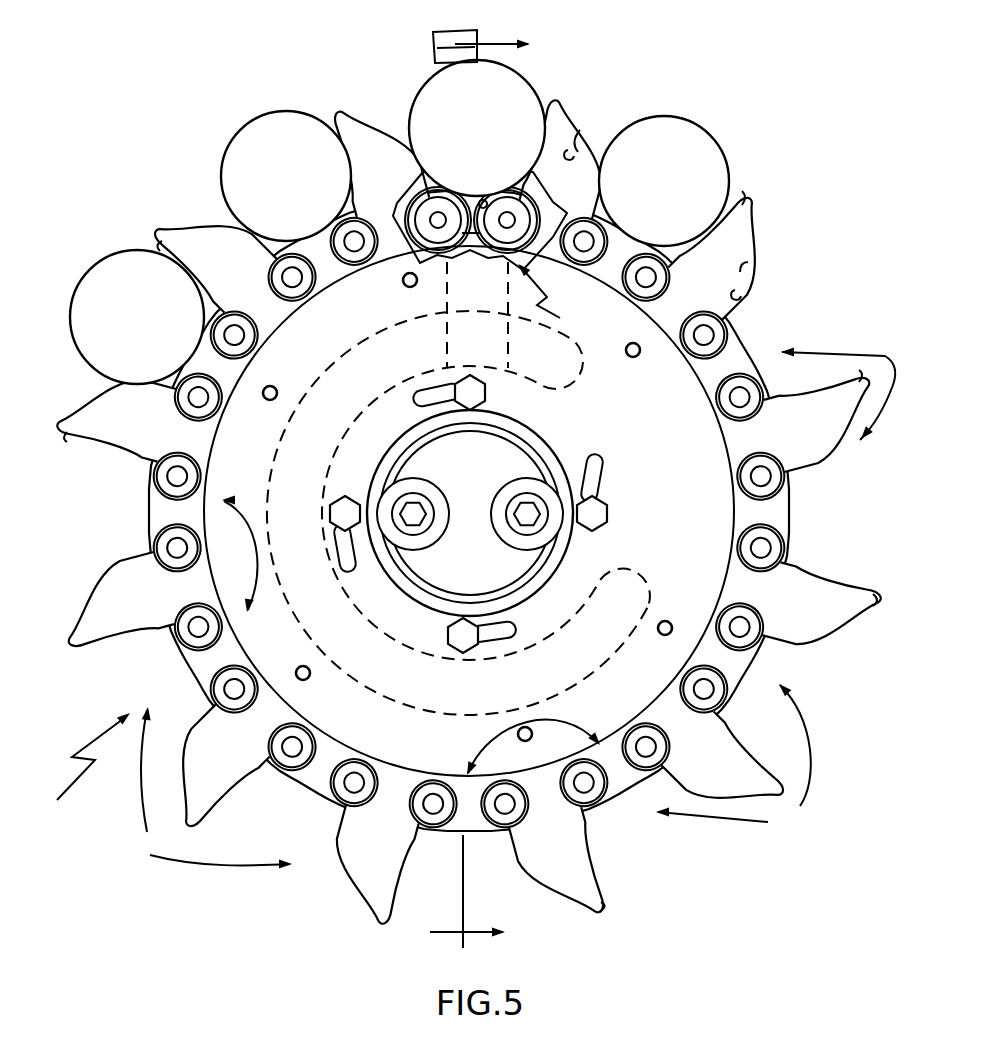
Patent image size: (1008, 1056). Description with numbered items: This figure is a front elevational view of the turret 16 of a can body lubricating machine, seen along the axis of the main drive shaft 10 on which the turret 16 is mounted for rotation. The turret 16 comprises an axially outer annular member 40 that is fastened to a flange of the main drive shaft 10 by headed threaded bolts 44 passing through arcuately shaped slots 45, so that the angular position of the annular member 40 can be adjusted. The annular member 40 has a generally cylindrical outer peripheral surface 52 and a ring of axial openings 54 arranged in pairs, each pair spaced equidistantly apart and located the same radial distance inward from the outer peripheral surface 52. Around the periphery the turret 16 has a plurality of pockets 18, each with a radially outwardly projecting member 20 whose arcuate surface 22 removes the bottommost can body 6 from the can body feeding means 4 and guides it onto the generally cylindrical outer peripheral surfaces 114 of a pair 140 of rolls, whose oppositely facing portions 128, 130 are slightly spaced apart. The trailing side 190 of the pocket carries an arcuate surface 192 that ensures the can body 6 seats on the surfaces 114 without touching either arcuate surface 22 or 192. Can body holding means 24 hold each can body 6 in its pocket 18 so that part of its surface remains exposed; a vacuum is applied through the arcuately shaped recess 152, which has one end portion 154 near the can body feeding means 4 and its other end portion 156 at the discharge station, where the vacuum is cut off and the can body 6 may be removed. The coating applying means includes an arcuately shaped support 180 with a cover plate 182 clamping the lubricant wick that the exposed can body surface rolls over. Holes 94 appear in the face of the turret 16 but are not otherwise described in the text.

The can body feeding means 4 is at (480, 491).
The can body 6 is at (533, 87).
The main drive shaft 10 is at (449, 483).
The turret 16 is at (81, 767).
The pocket 18 is at (518, 604).
The radially outwardly projecting member 20 is at (180, 242).
The arcuate surface 22 is at (176, 262).
The can body holding means 24 is at (412, 519).
The axially outer annular member 40 is at (678, 446).
The headed threaded bolt 44 is at (348, 500).
The arcuately shaped slot 45 is at (438, 392).
The outer peripheral surface 52 is at (790, 554).
The opening 54 is at (630, 776).
The hole 94 is at (276, 390).
The generally cylindrical outer peripheral surface 114 is at (440, 187).
The oppositely facing portion 128 is at (468, 228).
The oppositely facing portion 130 is at (486, 200).
The pair of shafts 140 is at (495, 247).
The arcuately shaped recess 152 is at (417, 694).
The end portion 154 is at (566, 384).
The other end portion 156 is at (648, 566).
The arcuately shaped support 180 is at (433, 38).
The cover plate 182 is at (433, 50).
The trailing side 190 is at (583, 128).
The arcuate surface 192 is at (572, 150).